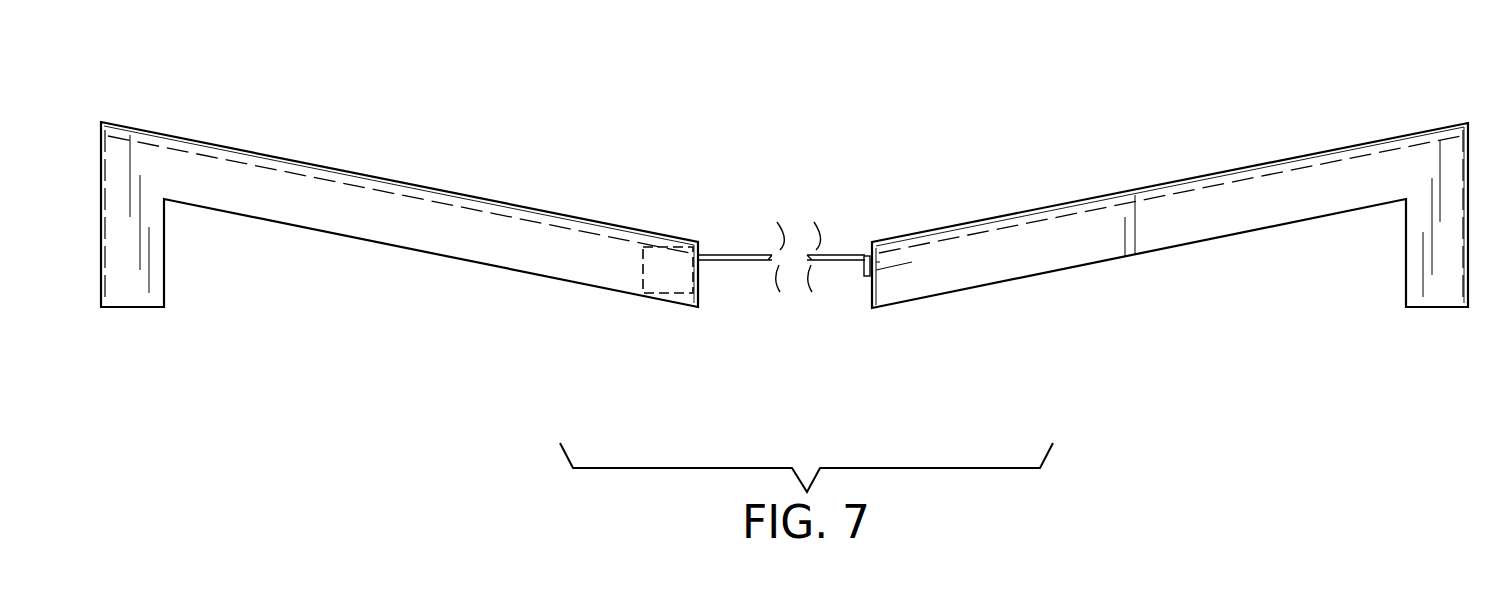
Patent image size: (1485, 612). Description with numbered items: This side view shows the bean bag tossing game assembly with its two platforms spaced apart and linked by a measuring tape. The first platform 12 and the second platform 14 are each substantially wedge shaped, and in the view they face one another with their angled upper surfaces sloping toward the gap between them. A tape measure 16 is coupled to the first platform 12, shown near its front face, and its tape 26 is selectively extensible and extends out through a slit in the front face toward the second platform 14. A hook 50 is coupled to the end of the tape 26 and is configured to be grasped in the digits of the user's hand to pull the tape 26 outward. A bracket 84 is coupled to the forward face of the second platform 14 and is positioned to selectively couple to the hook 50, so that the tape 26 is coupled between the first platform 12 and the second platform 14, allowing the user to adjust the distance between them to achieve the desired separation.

The first platform 12 is at (350, 170).
The second platform 14 is at (1158, 186).
The tape measure 16 is at (668, 266).
The tape 26 is at (737, 254).
The hook 50 is at (867, 277).
The bracket 84 is at (880, 268).